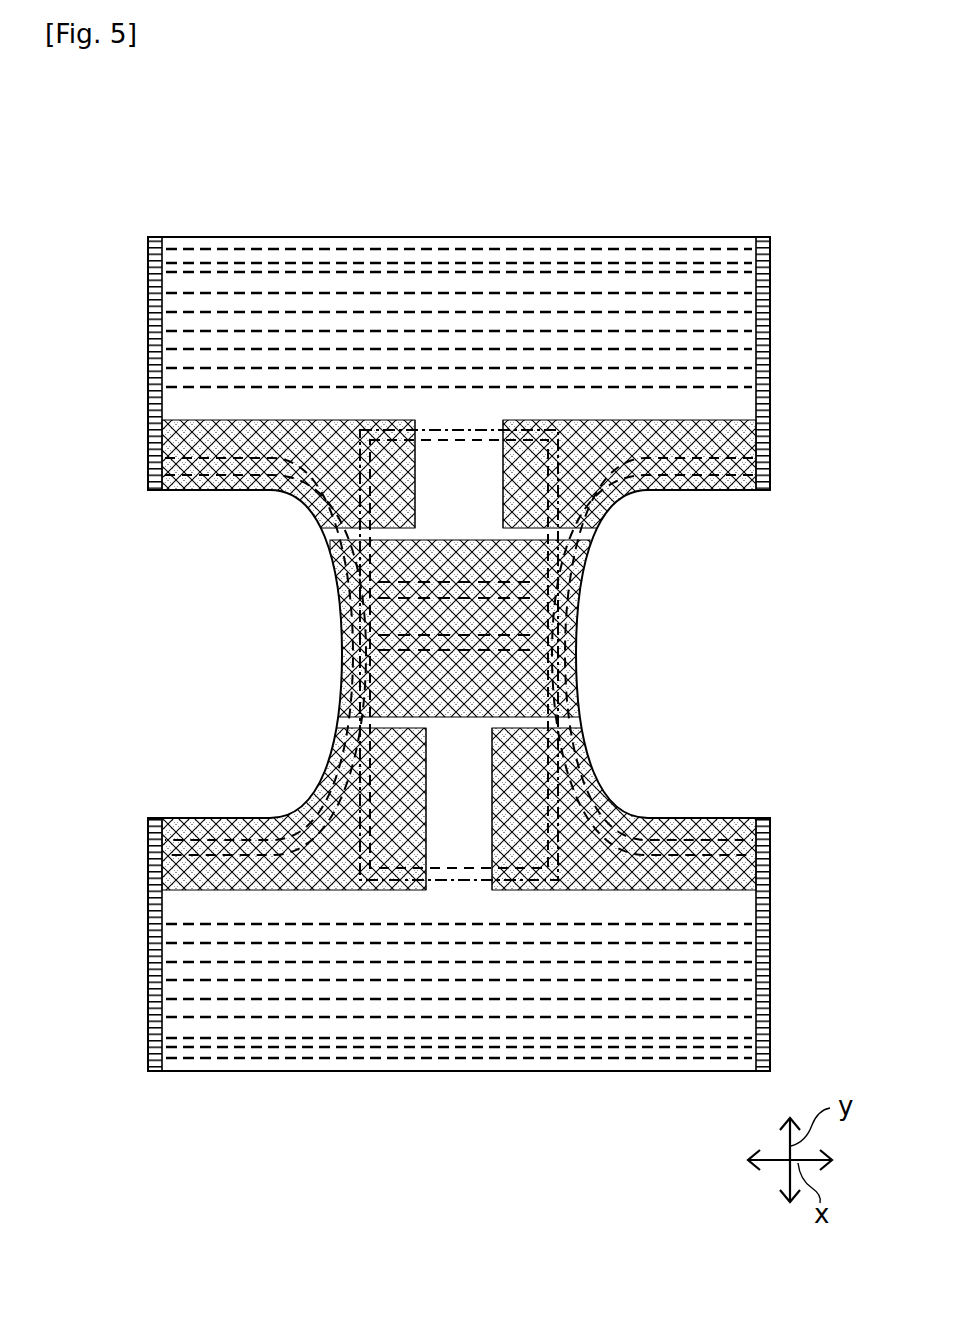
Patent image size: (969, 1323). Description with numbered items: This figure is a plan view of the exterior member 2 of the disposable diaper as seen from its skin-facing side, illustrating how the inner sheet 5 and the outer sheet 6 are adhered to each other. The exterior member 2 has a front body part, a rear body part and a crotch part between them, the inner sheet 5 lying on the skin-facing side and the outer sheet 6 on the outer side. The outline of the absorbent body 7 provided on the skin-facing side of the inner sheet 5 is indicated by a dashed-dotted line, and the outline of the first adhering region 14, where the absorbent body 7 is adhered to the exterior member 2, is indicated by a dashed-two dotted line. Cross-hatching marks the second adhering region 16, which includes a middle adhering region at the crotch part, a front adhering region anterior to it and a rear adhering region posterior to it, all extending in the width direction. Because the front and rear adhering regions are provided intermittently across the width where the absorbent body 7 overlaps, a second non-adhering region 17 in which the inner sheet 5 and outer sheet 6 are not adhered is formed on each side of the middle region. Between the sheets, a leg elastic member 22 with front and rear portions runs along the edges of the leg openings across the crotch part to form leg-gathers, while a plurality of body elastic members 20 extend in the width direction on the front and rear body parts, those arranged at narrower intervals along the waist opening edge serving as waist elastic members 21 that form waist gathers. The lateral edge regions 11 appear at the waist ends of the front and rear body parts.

The exterior member 2 is at (657, 163).
The inner sheet 5 is at (618, 280).
The outer sheet 6 is at (653, 237).
The absorbent body 7 is at (580, 615).
The waist edge elastic region 11 is at (148, 343).
The first adhering region 14 is at (580, 645).
The second adhering region 16 is at (520, 463).
The second non-adhering region 17 is at (472, 502).
The body elastic members 20 is at (311, 290).
The waist elastic members 21 is at (241, 250).
The leg elastic member 22 is at (187, 490).